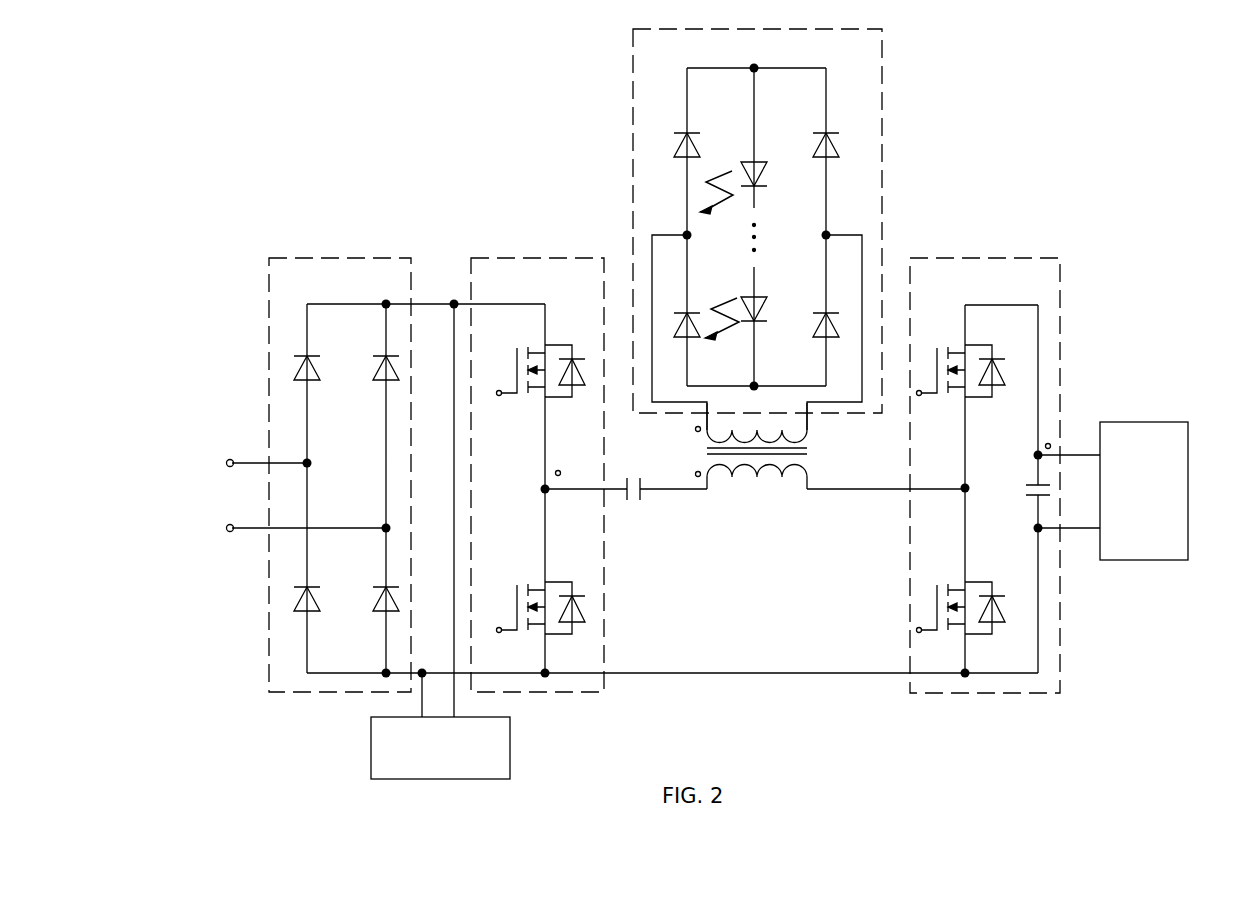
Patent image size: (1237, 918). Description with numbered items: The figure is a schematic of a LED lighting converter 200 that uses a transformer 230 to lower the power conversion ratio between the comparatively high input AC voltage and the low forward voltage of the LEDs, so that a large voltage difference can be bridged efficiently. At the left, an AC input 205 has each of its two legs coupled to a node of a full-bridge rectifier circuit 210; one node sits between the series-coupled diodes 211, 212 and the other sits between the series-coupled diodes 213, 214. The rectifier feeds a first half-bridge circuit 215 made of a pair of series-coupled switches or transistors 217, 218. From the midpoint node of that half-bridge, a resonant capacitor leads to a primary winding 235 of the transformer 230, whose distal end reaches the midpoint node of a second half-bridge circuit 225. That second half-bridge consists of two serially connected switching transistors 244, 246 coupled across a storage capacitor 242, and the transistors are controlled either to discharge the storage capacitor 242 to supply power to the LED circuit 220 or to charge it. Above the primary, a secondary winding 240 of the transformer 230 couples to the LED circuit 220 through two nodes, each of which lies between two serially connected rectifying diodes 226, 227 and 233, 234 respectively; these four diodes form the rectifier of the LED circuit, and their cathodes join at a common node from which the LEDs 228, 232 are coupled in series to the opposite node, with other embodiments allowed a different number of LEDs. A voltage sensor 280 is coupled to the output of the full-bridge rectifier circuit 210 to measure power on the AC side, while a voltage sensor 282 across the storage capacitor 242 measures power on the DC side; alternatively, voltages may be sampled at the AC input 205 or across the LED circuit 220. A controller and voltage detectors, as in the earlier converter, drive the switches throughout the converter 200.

The LED lighting converter 200 is at (360, 103).
The AC input 205 is at (247, 453).
The full-bridge rectifier circuit 210 is at (331, 257).
The diode 211 is at (313, 380).
The diode 212 is at (313, 611).
The diode 213 is at (378, 371).
The diode 214 is at (378, 601).
The first half-bridge circuit 215 is at (529, 257).
The switch or transistor 217 is at (572, 344).
The switch or transistor 218 is at (568, 582).
The LED circuit 220 is at (883, 120).
The second half-bridge circuit 225 is at (999, 257).
The rectifying diode 226 is at (697, 131).
The rectifying diode 227 is at (697, 311).
The LED 228 is at (758, 160).
The transformer 230 is at (771, 491).
The LED 232 is at (757, 325).
The rectifying diode 233 is at (818, 311).
The rectifying diode 234 is at (818, 131).
The primary winding 235 is at (708, 490).
The secondary winding 240 is at (810, 421).
The storage capacitor 242 is at (1046, 470).
The switching transistor 244 is at (988, 398).
The switching transistor 246 is at (993, 582).
The voltage sensor 280 is at (511, 748).
The voltage sensor 282 is at (1143, 421).